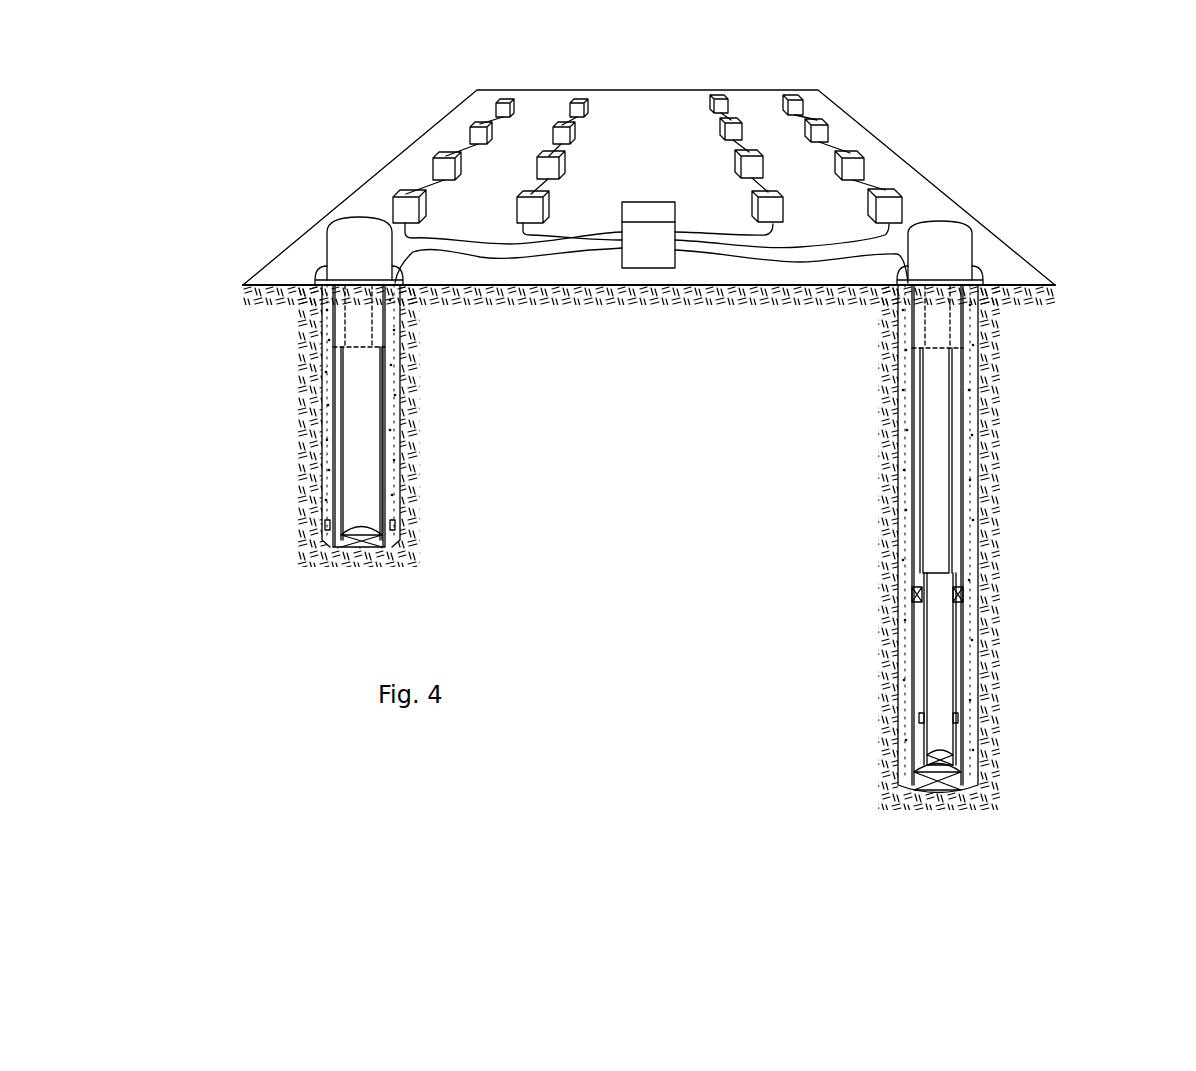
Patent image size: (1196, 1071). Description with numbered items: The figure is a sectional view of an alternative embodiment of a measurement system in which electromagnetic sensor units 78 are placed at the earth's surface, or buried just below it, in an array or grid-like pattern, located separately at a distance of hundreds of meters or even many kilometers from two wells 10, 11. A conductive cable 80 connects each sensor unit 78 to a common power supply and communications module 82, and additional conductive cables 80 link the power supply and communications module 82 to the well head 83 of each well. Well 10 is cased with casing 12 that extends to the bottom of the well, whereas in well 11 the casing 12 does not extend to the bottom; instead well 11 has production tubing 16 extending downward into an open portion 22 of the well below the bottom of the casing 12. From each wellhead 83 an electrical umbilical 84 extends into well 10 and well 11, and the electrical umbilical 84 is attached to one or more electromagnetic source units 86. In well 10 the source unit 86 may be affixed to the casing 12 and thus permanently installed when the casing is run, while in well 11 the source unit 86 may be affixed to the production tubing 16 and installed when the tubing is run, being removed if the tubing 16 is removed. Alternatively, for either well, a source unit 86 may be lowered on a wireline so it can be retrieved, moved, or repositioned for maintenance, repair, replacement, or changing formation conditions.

The well 10 is at (235, 385).
The well 11 is at (1085, 370).
The casing 12 is at (322, 412).
The production tubing 16 is at (955, 427).
The open portion 22 is at (958, 672).
The electromagnetic sensor units 78 is at (476, 124).
The conductive cable 80 is at (440, 237).
The power supply and communications module 82 is at (640, 215).
The well head 83 is at (355, 228).
The electrical umbilical 84 is at (392, 378).
The electromagnetic source units 86 is at (397, 527).